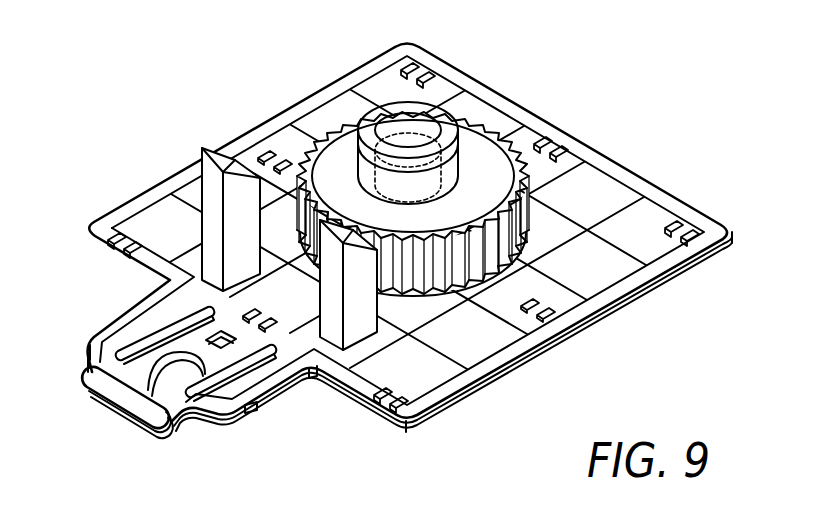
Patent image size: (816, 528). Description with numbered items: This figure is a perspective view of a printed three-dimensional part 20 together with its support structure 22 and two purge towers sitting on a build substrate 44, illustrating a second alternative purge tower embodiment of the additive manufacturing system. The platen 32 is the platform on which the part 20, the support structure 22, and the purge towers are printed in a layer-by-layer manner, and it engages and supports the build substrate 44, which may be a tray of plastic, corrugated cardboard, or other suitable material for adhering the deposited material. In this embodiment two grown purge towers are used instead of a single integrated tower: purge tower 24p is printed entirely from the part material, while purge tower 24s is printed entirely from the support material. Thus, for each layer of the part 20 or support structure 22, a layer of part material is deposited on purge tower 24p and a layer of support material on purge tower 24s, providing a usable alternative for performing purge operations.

The platen 32 is at (111, 211).
The 3D part 20 is at (493, 165).
The support structure 22 is at (452, 185).
The purge tower 24s is at (213, 229).
The purge tower 24p is at (360, 327).
The build substrate 44 is at (597, 277).